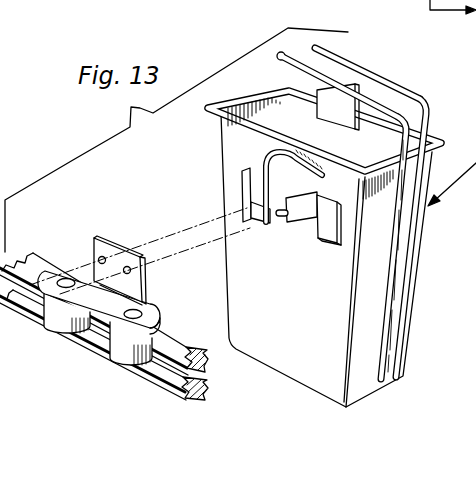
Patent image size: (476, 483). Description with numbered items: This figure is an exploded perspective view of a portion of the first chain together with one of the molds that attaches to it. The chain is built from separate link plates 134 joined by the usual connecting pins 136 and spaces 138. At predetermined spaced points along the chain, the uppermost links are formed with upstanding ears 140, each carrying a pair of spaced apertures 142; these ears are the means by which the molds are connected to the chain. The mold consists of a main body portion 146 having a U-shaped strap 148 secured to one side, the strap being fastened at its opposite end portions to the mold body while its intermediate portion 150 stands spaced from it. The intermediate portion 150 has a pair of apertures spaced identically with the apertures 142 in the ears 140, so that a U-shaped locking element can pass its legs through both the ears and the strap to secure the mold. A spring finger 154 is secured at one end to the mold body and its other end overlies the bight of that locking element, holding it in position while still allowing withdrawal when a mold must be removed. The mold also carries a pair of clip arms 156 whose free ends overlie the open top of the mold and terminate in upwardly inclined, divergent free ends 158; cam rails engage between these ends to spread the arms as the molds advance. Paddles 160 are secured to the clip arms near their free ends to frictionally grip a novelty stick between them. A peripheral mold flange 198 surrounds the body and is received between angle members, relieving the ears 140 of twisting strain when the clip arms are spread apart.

The link plates 134 is at (106, 317).
The connecting pins 136 is at (113, 318).
The spaces 138 is at (238, 346).
The upstanding ears 140 is at (134, 261).
The spaced apertures 142 is at (110, 238).
The main body portion 146 is at (336, 249).
The U-shaped strap 148 is at (293, 233).
The intermediate portion 150 is at (293, 217).
The spring finger 154 is at (274, 176).
The clip arms 156 is at (417, 227).
The divergent free ends 158 is at (348, 59).
The paddles 160 is at (349, 88).
The peripheral mold flange 198 is at (308, 131).